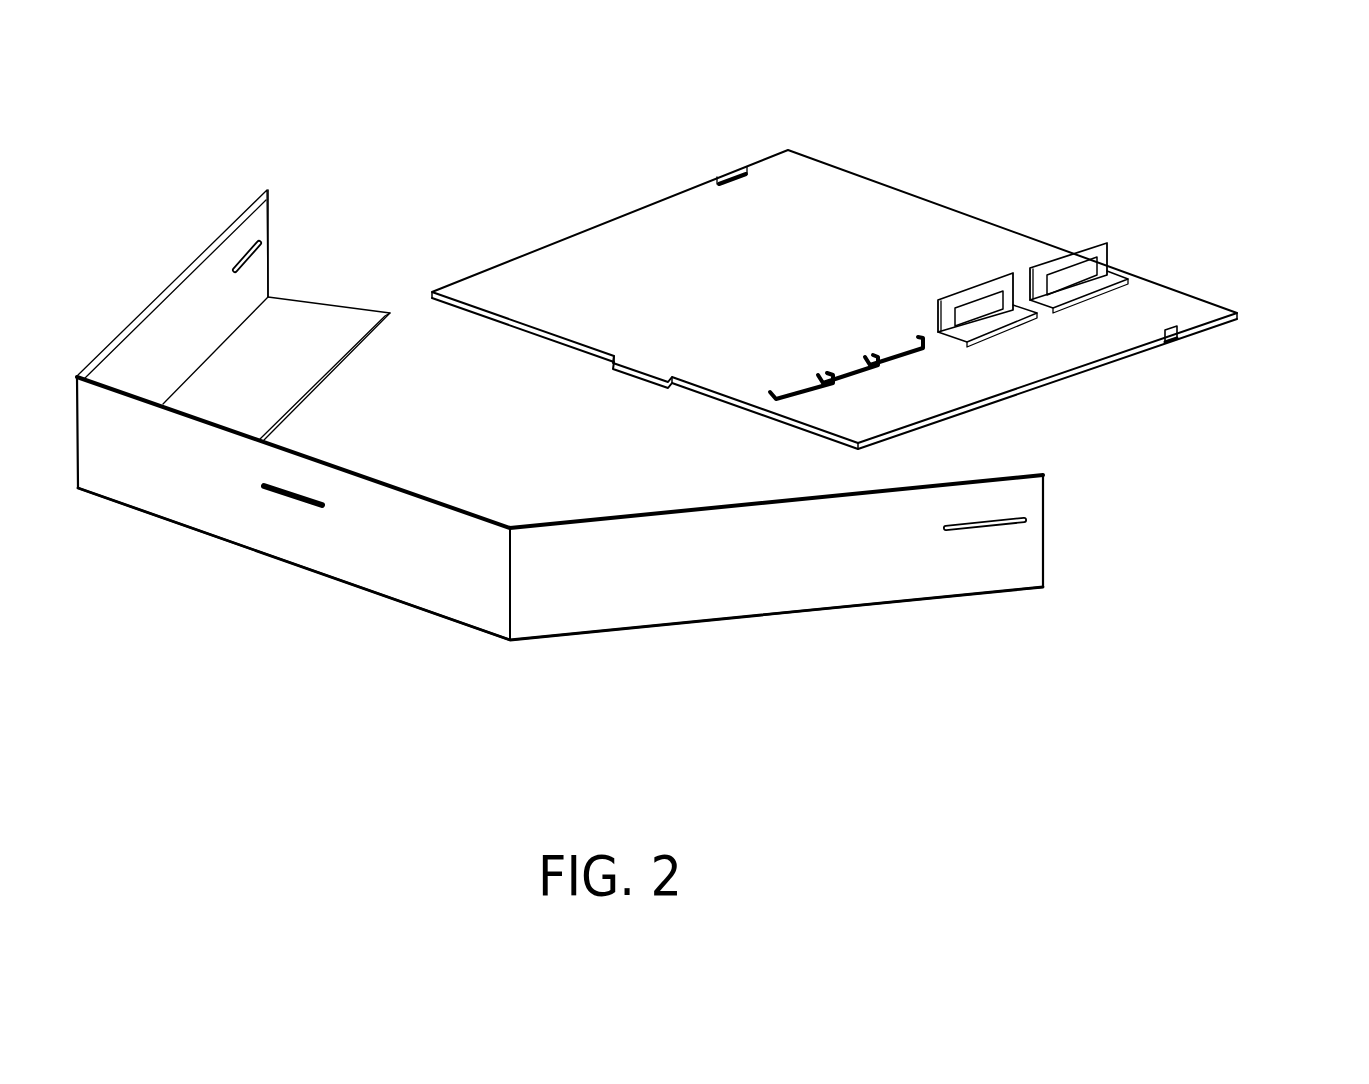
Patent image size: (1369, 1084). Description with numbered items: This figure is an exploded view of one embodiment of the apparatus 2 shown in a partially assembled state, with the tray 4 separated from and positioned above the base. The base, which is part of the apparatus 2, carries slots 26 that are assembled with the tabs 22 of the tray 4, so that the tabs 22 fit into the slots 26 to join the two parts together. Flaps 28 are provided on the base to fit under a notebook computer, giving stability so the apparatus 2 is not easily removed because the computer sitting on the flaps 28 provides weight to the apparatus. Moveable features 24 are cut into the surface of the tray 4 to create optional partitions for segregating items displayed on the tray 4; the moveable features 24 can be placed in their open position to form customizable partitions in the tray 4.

The apparatus 2 is at (227, 542).
The tray 4 is at (915, 217).
The tabs 22 is at (760, 157).
The moveable features 24 is at (1093, 240).
The slots 26 is at (242, 252).
The flaps 28 is at (308, 300).